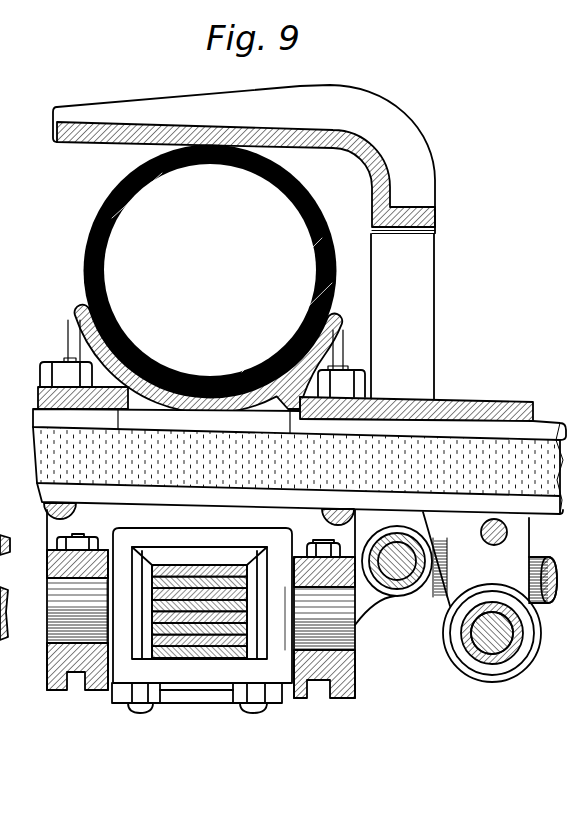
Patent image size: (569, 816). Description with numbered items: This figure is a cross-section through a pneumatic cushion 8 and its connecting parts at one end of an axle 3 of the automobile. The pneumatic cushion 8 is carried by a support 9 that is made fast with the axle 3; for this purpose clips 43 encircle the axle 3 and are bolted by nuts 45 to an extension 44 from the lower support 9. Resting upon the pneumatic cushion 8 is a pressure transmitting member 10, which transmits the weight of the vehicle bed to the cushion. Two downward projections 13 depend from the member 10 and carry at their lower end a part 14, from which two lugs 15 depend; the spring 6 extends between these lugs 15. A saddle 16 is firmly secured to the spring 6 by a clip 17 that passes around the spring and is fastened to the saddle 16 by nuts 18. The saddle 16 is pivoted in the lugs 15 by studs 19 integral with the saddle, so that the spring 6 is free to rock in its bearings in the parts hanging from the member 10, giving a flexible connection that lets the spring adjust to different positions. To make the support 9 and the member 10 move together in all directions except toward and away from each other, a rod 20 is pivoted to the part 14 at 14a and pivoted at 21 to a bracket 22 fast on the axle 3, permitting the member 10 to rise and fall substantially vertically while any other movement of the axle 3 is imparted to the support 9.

The axle 3 is at (505, 470).
The spring 6 is at (207, 640).
The pneumatic cushion 8 is at (103, 203).
The support 9 is at (75, 318).
The pressure transmitting member 10 is at (378, 150).
The downward projection 13 is at (417, 296).
The part 14 is at (199, 595).
The pivot 14a is at (397, 567).
The lug 15 is at (44, 673).
The saddle 16 is at (46, 648).
The clip 17 is at (193, 560).
The nut 18 is at (128, 702).
The stud 19 is at (63, 611).
The rod 20 is at (540, 571).
The pivot 21 is at (487, 634).
The bracket 22 is at (512, 548).
The clip 43 is at (326, 509).
The extension 44 is at (64, 409).
The nut 45 is at (42, 372).